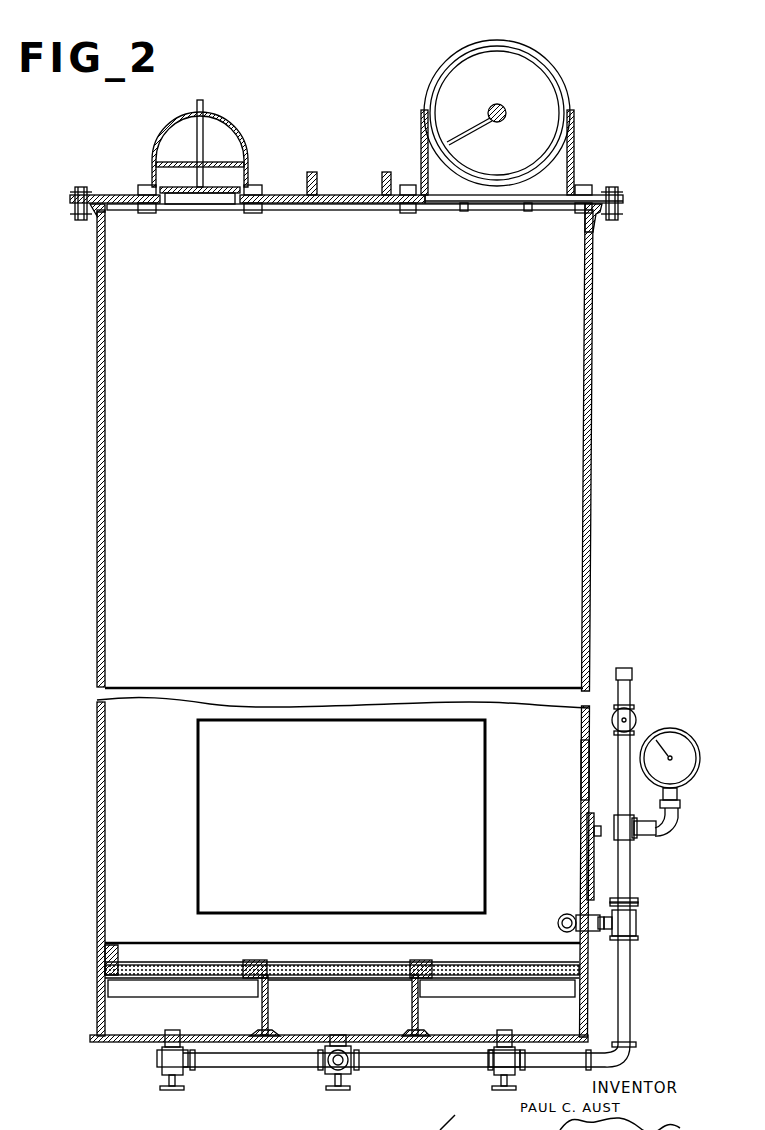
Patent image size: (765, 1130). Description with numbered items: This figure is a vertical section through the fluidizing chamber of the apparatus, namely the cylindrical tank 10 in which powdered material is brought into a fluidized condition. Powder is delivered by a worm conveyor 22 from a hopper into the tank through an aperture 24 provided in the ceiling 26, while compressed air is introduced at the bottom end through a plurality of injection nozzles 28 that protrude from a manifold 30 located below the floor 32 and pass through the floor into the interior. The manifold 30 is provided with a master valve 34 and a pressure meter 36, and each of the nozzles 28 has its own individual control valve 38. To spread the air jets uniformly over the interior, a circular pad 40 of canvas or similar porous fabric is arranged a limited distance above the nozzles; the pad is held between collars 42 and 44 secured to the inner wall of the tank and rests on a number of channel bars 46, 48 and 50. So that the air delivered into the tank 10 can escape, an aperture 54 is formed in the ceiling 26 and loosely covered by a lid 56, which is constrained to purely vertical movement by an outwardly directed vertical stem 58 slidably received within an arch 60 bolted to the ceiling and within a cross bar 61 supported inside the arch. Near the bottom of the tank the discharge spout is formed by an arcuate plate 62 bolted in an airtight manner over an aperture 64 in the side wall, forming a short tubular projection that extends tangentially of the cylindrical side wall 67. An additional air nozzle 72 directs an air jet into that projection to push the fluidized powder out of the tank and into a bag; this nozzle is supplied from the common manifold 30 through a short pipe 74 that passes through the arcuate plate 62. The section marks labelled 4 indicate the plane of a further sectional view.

The tank 10 is at (598, 413).
The worm conveyor 22 is at (580, 90).
The aperture 24 is at (432, 208).
The ceiling 26 is at (312, 206).
The injection nozzles 28 is at (335, 1036).
The manifold 30 is at (300, 1064).
The floor 32 is at (130, 1043).
The master valve 34 is at (632, 718).
The pressure meter 36 is at (682, 740).
The control valves 38 is at (170, 1090).
The circular pad 40 is at (298, 963).
The collar 42 is at (118, 978).
The collar 44 is at (110, 950).
The channel bar 46 is at (268, 998).
The channel bar 48 is at (342, 1004).
The channel bar 50 is at (412, 1000).
The aperture 54 is at (240, 206).
The lid 56 is at (238, 182).
The vertical stem 58 is at (205, 131).
The arch 60 is at (172, 124).
The cross bar 61 is at (180, 162).
The arcuate plate 62 is at (590, 876).
The aperture 64 is at (590, 846).
The cylindrical side wall 67 is at (580, 758).
The air nozzle 72 is at (572, 914).
The pipe 74 is at (606, 932).
The section line 4- 4 is at (390, 880).